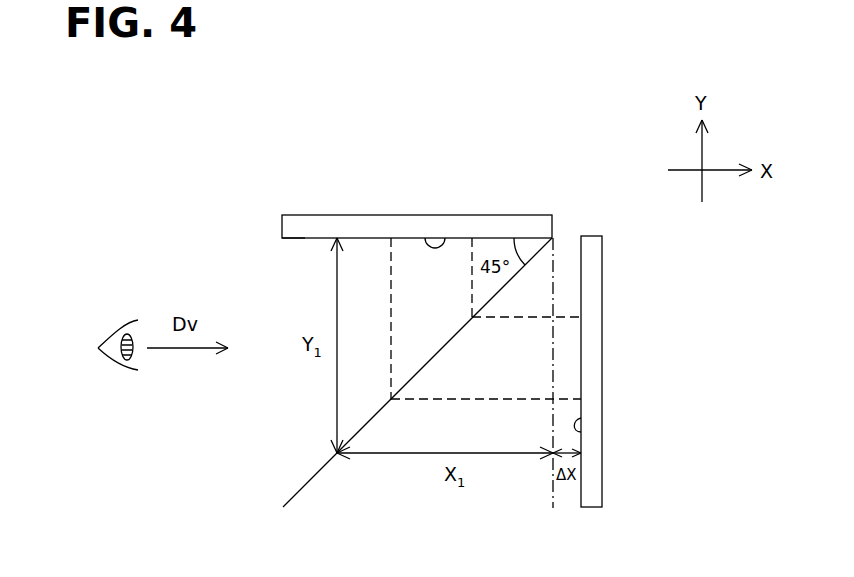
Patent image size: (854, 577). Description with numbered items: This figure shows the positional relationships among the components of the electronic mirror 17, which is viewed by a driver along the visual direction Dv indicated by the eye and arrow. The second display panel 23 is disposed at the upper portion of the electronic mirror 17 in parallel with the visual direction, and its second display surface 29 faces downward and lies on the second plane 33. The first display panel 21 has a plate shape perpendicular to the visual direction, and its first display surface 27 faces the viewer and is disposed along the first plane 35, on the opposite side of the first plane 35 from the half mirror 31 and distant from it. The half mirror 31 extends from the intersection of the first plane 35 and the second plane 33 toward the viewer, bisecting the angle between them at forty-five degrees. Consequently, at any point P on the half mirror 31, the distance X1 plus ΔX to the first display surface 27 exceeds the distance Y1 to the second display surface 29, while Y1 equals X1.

The electronic mirror 17 is at (552, 152).
The first display panel 21 is at (602, 345).
The second display panel 23 is at (367, 224).
The first display surface 27 is at (581, 432).
The second display surface 29 is at (445, 238).
The half mirror 31 is at (305, 488).
The second plane 33 is at (305, 240).
The first plane 35 is at (549, 502).